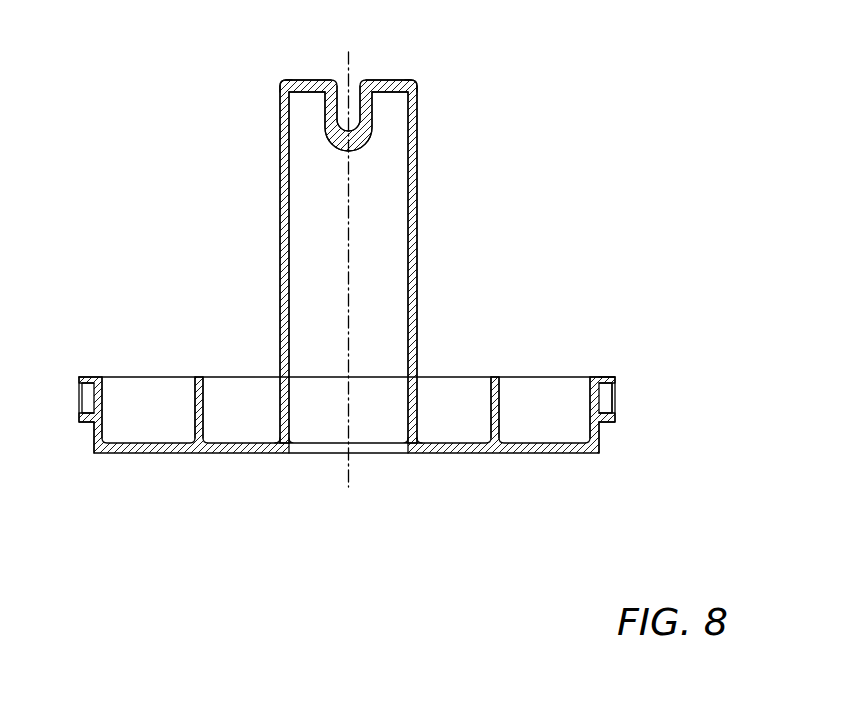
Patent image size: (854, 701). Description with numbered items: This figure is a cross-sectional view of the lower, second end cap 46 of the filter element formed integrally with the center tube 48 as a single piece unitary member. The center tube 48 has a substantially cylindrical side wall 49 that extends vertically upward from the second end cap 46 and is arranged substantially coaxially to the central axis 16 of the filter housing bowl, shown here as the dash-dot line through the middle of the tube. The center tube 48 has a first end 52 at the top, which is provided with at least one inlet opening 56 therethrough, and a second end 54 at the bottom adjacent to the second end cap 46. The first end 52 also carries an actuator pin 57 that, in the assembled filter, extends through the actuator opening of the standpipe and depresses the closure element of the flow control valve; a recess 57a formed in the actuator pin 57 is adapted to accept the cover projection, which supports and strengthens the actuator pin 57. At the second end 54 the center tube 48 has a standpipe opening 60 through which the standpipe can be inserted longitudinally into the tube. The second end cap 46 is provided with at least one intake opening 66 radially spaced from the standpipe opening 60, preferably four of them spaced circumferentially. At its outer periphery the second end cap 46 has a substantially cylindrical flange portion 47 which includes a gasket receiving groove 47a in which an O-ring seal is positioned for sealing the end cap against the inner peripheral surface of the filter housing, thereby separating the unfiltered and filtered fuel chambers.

The central axis 16 is at (349, 473).
The second end cap 46 is at (143, 455).
The flange portion 47 is at (599, 437).
The gasket receiving groove 47a is at (598, 398).
The center tube 48 is at (418, 264).
The cylindrical side wall 49 is at (280, 248).
The first end 52 is at (282, 93).
The second end 54 is at (417, 410).
The inlet opening 56 is at (308, 80).
The actuator pin 57 is at (372, 128).
The recess 57a is at (347, 80).
The standpipe opening 60 is at (325, 447).
The intake opening 66 is at (245, 447).